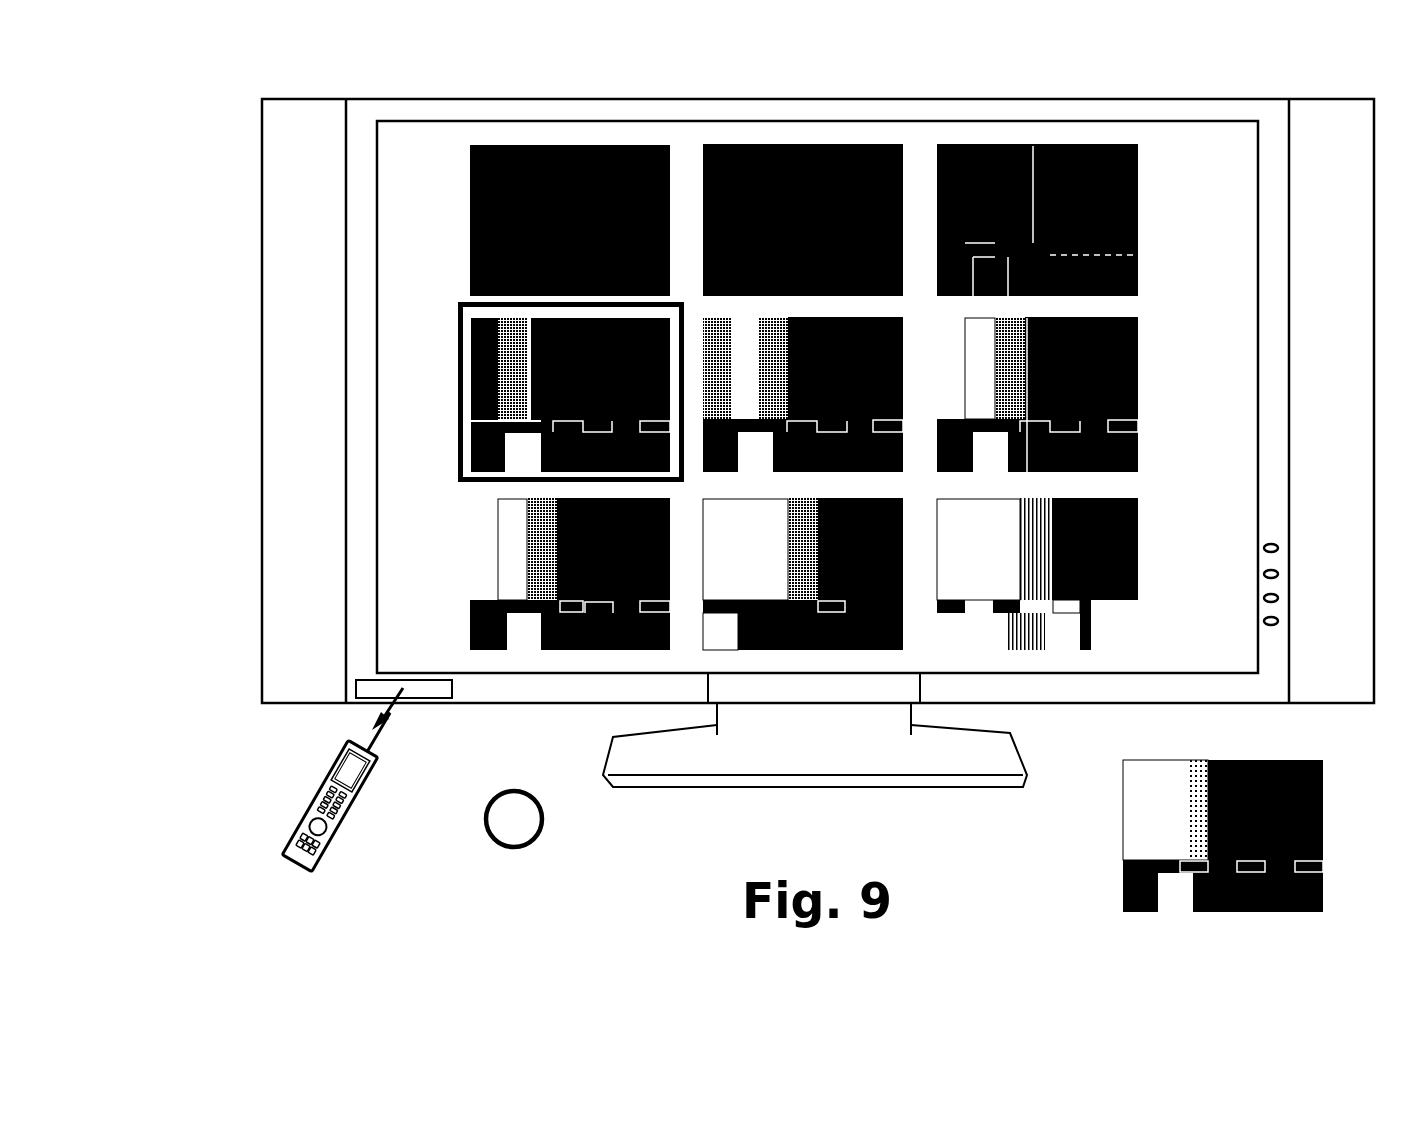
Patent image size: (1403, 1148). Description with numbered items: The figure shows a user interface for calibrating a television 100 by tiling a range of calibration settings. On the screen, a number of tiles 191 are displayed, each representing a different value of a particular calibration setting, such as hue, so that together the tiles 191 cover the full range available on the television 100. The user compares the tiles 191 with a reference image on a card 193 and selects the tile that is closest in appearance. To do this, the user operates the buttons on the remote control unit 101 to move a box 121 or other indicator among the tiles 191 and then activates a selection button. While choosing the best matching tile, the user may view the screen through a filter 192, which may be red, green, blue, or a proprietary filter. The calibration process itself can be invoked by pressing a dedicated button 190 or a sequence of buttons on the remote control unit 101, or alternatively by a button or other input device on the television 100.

The television 100 is at (283, 482).
The box 121 is at (457, 357).
The tiles 191 is at (557, 520).
The dedicated button 190 is at (307, 824).
The remote control unit 101 is at (317, 826).
The filter 192 is at (511, 818).
The card 193 is at (1139, 832).